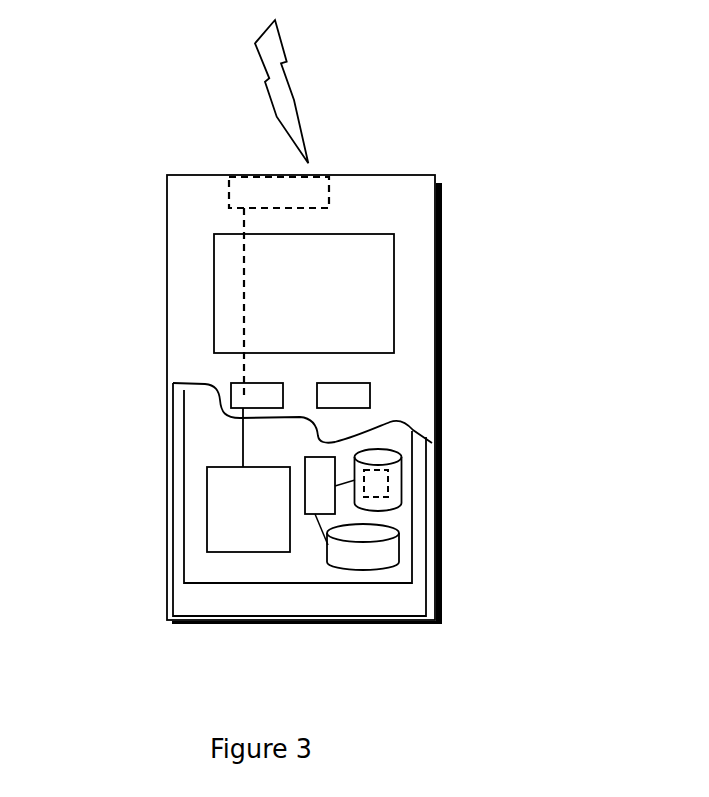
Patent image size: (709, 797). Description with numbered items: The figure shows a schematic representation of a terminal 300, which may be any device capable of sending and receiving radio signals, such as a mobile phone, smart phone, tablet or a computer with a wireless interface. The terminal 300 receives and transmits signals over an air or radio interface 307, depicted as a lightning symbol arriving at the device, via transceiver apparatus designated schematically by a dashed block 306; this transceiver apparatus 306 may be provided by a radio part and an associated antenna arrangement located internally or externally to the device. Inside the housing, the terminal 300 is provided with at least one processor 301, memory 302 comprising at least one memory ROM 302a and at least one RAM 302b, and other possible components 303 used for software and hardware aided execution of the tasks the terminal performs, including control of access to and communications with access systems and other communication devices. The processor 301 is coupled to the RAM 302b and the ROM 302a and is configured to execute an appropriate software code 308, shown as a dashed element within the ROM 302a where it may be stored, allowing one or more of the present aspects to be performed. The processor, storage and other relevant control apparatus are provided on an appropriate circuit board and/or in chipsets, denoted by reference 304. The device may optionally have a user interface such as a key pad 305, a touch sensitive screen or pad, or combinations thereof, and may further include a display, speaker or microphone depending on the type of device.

The terminal 300 is at (168, 212).
The processor 301 is at (320, 473).
The memory 302 is at (207, 568).
The memory ROM 302a is at (402, 484).
The RAM 302b is at (370, 545).
The other possible components 303 is at (231, 393).
The circuit board and/or chipsets 304 is at (213, 495).
The key pad 305 is at (229, 283).
The transceiver apparatus 306 is at (327, 190).
The air or radio interface 307 is at (311, 111).
The software code 308 is at (373, 483).